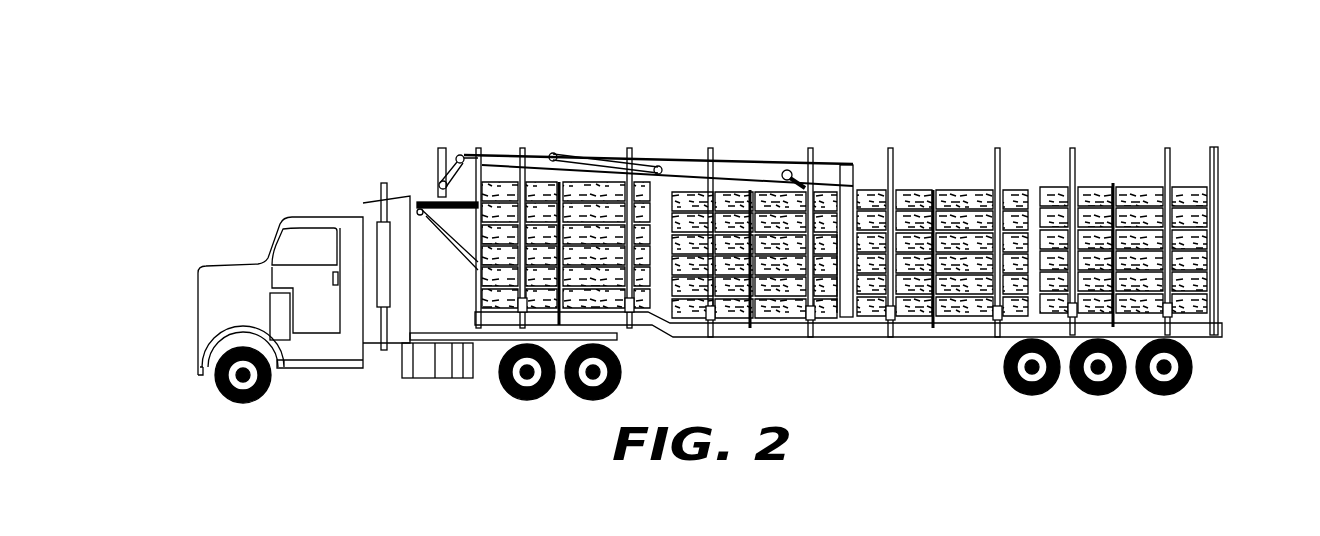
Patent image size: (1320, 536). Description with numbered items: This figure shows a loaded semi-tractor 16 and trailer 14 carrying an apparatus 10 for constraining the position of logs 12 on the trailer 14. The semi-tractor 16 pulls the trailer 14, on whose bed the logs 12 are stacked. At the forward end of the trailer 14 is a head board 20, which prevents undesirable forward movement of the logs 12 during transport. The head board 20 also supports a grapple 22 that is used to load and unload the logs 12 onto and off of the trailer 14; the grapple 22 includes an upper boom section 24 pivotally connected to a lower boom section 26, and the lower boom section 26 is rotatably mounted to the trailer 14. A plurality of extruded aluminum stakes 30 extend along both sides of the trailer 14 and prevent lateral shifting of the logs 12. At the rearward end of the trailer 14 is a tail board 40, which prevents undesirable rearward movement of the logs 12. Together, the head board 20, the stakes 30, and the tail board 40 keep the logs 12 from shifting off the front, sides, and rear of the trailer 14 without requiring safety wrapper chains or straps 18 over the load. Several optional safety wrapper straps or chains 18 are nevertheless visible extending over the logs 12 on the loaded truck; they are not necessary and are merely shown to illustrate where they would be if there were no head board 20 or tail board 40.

The apparatus 10 is at (931, 153).
The logs 12 is at (1097, 188).
The trailer 14 is at (957, 330).
The semi-tractor 16 is at (340, 358).
The safety wrapper straps or chains 18 is at (737, 323).
The head board 20 is at (483, 177).
The grapple 22 is at (440, 190).
The upper boom section 24 is at (553, 157).
The lower boom section 26 is at (738, 168).
The extruded aluminum stakes 30 is at (813, 152).
The tail board 40 is at (1217, 198).